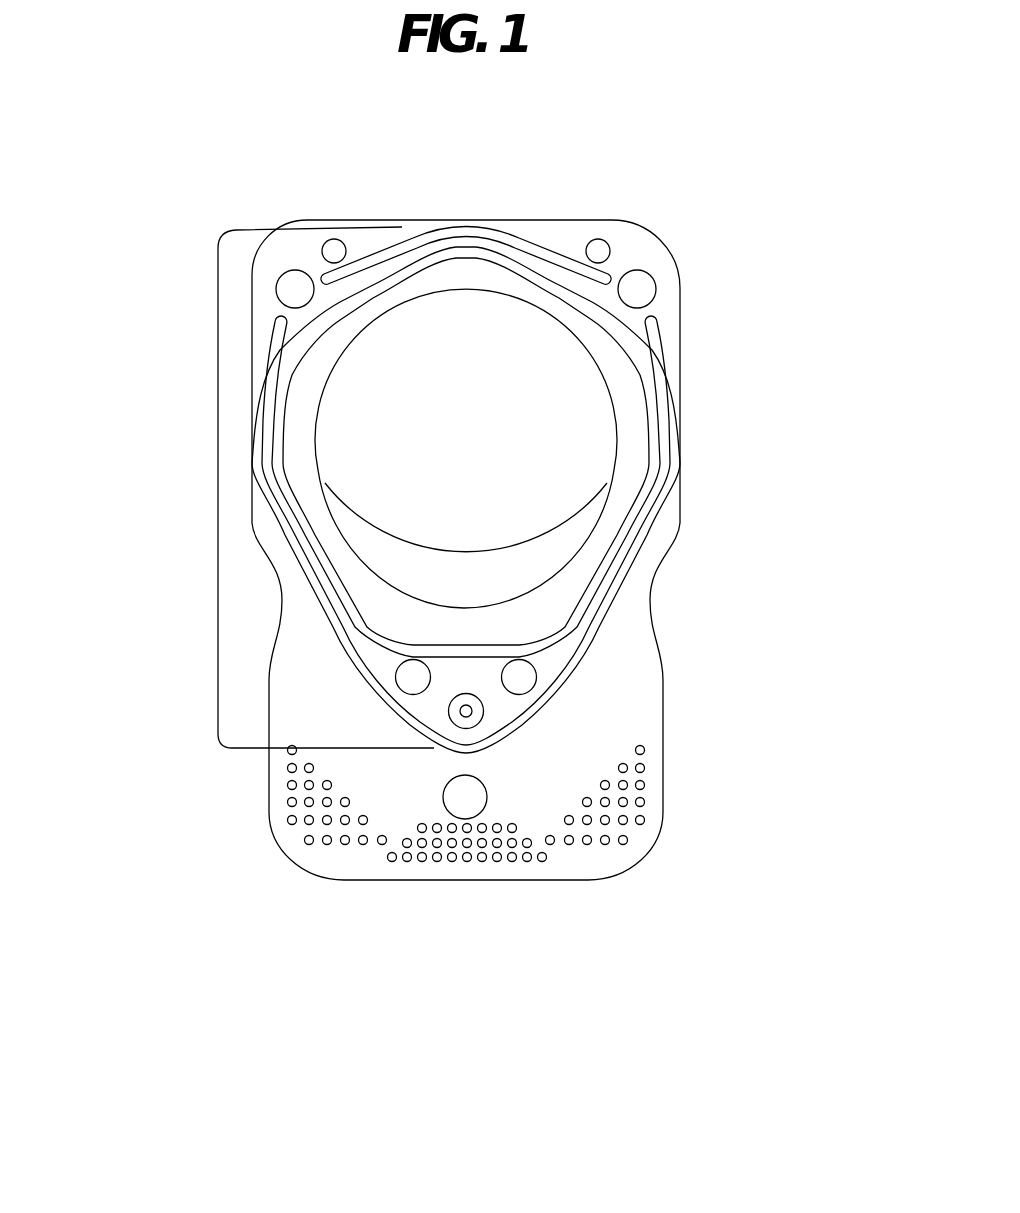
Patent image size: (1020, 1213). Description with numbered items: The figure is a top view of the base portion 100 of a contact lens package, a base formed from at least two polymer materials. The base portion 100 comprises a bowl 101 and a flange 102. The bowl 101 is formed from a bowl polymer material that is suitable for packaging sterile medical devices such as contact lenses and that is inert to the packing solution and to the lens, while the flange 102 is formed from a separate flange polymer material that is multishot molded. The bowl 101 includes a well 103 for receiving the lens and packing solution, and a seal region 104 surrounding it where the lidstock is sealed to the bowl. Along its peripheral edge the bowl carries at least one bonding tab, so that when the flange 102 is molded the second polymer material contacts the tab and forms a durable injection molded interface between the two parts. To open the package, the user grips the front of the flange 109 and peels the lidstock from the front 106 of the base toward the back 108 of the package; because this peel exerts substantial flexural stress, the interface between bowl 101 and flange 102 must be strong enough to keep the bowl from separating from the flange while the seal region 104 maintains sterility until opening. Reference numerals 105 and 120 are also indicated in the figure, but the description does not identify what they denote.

The base portion 100 is at (475, 566).
The bowl 101 is at (208, 433).
The flange 102 is at (248, 778).
The well 103 is at (552, 443).
The seal region 104 is at (362, 632).
The front frame 105 is at (643, 552).
The front 106 is at (492, 686).
The back 108 is at (531, 206).
The front of the flange 109 is at (537, 781).
The speaker openings 120 is at (458, 848).